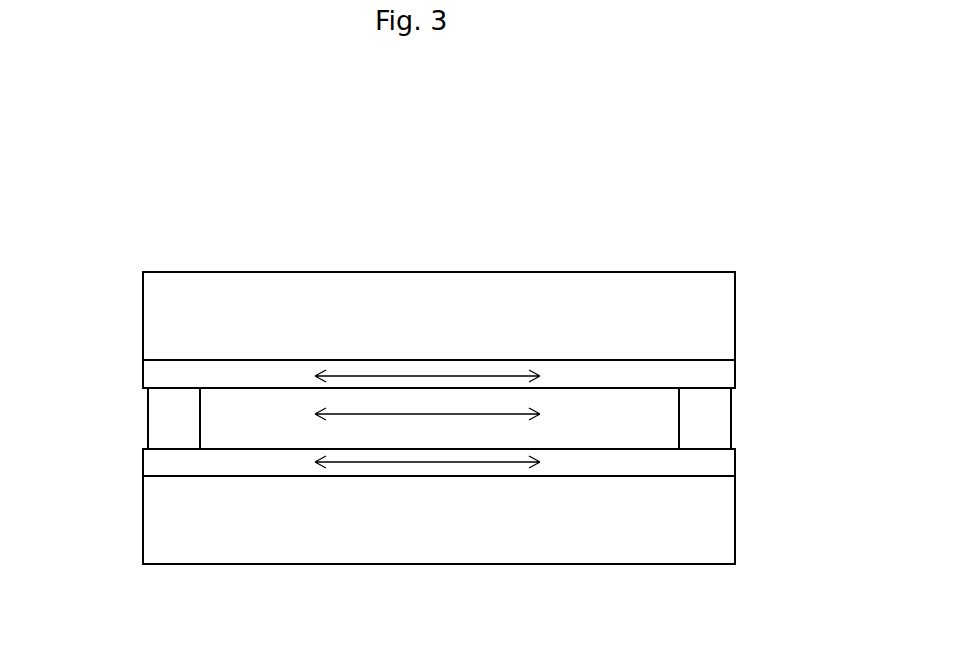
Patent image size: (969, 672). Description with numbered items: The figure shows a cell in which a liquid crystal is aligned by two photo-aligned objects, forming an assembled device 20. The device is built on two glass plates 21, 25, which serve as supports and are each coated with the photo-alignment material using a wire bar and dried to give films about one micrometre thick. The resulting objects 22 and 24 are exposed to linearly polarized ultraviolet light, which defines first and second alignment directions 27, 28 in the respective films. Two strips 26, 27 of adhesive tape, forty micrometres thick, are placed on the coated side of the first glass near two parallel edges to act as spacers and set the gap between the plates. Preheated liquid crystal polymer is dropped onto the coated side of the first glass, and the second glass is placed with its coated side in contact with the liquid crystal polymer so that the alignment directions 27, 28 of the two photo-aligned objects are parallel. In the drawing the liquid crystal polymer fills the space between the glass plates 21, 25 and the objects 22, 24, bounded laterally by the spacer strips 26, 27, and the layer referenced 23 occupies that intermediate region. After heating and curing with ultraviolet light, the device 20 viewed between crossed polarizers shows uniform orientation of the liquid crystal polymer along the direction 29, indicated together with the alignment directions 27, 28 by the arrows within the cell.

The assembled device 20 is at (128, 245).
The glass plate 21 is at (567, 538).
The photo-aligned object 22 is at (708, 462).
The intermediate cavity layer 23 is at (274, 408).
The photo-aligned object 24 is at (726, 370).
The glass plate 25 is at (658, 285).
The adhesive tape strip 26 is at (706, 430).
The adhesive tape strip / first alignment direction 27 is at (175, 414).
The second alignment direction 28 is at (505, 375).
The orientation direction 29 is at (408, 407).